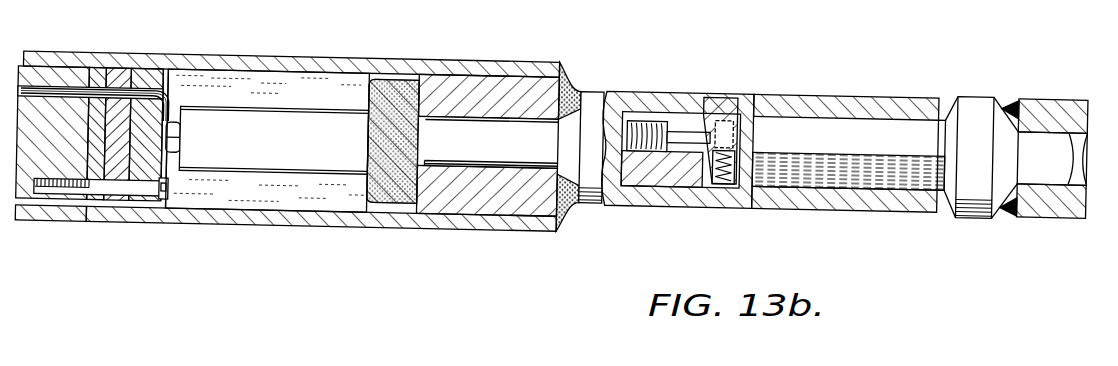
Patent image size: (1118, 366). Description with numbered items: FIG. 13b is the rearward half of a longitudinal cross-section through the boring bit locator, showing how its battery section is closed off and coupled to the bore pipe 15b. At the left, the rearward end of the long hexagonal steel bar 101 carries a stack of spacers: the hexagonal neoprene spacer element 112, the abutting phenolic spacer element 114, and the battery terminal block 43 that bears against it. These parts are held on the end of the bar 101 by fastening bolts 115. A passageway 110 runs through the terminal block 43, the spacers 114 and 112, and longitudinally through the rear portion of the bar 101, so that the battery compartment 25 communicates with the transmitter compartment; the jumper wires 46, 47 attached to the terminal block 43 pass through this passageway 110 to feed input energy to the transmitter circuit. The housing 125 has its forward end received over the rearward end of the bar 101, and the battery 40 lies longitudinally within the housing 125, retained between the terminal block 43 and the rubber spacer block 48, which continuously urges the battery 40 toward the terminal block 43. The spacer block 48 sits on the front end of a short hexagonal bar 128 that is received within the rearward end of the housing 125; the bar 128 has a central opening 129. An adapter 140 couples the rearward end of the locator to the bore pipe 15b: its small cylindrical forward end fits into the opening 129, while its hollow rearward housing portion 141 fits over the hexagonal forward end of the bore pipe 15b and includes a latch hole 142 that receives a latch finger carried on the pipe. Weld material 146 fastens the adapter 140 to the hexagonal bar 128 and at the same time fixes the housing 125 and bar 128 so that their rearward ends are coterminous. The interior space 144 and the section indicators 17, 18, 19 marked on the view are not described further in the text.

The battery compartment 25 is at (307, 202).
The hexagonal steel bar 101 is at (62, 200).
The passageway 110 is at (36, 97).
The neoprene spacer element 112 is at (100, 68).
The jumper wire 46 is at (75, 88).
The jumper wire 47 is at (50, 90).
The terminal block 43 is at (152, 165).
The phenolic spacer element 114 is at (123, 198).
The fastening bolt 115 is at (168, 193).
The housing 125 is at (277, 62).
The battery 40 is at (273, 140).
The rubber spacer block 48 is at (383, 88).
The short hexagonal bar 128 is at (452, 203).
The chamber 144 is at (487, 142).
The central opening 129 is at (478, 170).
The weld material 146 is at (570, 203).
The adapter 140 is at (630, 55).
The latch hole 142 is at (720, 95).
The hollow rearward housing portion 141 is at (812, 97).
The bore pipe 15b is at (1065, 207).
The section line 17- 17 is at (138, 8).
The section line 18- 18 is at (547, 25).
The section line 19- 19 is at (882, 50).